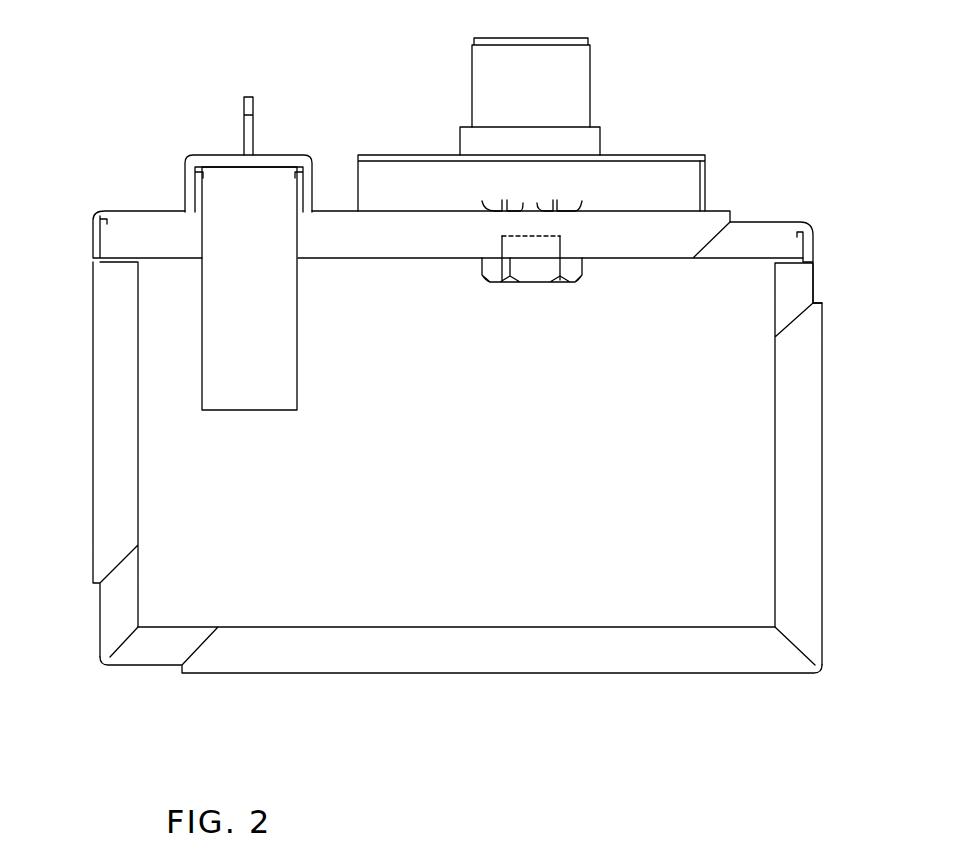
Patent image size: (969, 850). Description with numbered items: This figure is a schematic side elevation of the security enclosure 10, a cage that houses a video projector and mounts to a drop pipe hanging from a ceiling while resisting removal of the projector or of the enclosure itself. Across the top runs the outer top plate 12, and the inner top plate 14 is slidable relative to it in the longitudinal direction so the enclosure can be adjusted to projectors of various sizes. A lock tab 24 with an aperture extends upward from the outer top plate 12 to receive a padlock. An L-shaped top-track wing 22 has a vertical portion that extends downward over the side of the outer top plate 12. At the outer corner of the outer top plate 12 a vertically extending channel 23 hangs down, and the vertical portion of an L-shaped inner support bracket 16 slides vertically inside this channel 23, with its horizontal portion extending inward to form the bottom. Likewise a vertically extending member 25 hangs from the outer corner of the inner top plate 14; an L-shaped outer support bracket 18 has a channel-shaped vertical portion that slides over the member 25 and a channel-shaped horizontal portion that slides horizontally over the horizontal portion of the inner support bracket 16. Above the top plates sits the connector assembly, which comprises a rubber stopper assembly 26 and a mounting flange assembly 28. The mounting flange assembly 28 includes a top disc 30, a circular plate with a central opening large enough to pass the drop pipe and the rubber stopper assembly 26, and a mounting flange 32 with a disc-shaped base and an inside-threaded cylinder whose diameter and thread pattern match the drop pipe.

The security enclosure 10 is at (163, 111).
The outer top plate 12 is at (128, 240).
The inner top plate 14 is at (775, 218).
The inner support bracket 16 is at (127, 613).
The outer support bracket 18 is at (797, 565).
The top-track wing 22 is at (243, 258).
The vertically extending channel 23 is at (125, 465).
The lock tab 24 is at (253, 127).
The vertically extending member 25 is at (815, 285).
The rubber stopper assembly 26 is at (560, 93).
The mounting flange assembly 28 is at (708, 183).
The top disc 30 is at (670, 155).
The mounting flange 32 is at (602, 137).